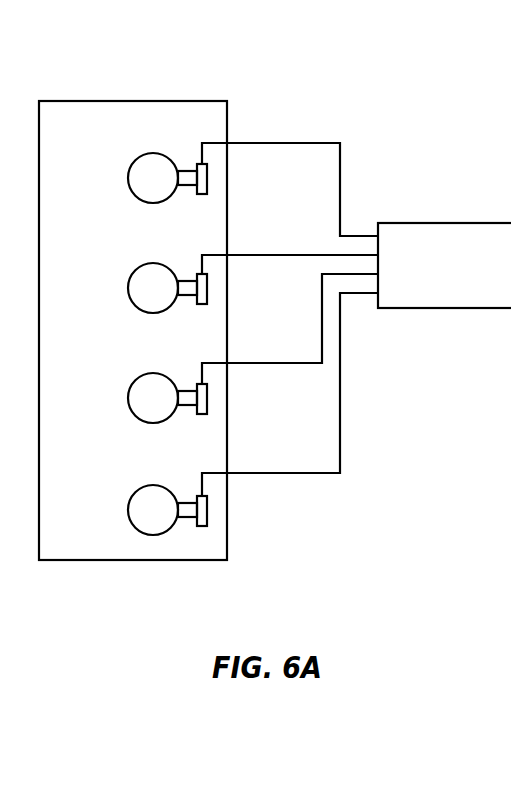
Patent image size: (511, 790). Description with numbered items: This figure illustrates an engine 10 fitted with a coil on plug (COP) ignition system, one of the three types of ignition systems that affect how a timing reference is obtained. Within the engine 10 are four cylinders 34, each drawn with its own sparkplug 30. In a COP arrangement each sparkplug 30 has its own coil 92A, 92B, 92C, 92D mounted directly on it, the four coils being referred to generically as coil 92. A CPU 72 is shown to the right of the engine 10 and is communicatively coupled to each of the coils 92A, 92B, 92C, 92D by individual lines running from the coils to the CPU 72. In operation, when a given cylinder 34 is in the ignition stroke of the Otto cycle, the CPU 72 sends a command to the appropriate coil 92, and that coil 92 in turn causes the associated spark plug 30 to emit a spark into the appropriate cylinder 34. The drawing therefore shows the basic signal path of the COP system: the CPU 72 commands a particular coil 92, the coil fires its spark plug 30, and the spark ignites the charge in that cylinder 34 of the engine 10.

The engine 10 is at (112, 89).
The coil 92 is at (290, 293).
The cylinder 34 is at (130, 172).
The sparkplug 30 is at (188, 168).
The coil 92A is at (208, 180).
The coil 92B is at (208, 290).
The coil 92C is at (208, 400).
The coil 92D is at (208, 512).
The CPU 72 is at (433, 289).